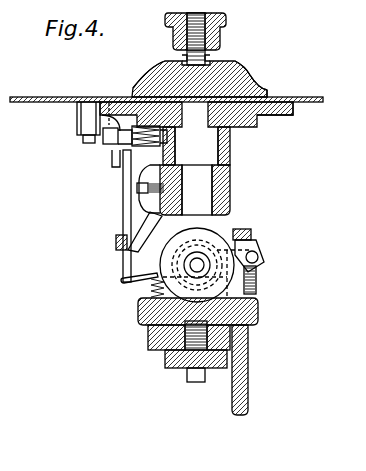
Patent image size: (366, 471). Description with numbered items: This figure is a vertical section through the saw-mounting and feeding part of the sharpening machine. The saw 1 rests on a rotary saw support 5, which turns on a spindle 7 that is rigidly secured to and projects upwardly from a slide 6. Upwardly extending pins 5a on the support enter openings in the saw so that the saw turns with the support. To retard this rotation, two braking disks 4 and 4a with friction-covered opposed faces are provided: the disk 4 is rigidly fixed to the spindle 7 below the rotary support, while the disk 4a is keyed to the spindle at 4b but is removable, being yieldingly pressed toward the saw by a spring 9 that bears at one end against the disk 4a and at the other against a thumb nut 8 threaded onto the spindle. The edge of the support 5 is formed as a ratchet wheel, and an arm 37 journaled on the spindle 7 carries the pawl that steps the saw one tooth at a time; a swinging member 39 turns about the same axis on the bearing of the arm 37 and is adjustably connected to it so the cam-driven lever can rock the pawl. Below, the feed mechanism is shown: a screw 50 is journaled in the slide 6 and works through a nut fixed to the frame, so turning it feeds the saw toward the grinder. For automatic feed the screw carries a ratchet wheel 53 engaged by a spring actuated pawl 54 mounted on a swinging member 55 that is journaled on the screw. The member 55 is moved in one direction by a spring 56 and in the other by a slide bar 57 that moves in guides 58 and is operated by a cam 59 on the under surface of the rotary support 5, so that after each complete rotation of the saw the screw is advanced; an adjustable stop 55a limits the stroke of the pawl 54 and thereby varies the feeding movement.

The saw 1 is at (313, 103).
The braking disk 4 is at (257, 122).
The braking disk 4a is at (243, 78).
The key 4b is at (157, 62).
The saw support 5 is at (290, 115).
The pins 5a is at (124, 90).
The slide 6 is at (232, 193).
The spindle 7 is at (174, 190).
The thumb nut 8 is at (224, 26).
The spring 9 is at (210, 52).
The arm 37 is at (232, 142).
The swinging member 39 is at (233, 157).
The screw 50 is at (200, 260).
The ratchet wheel 53 is at (197, 265).
The pawl 54 is at (252, 240).
The swinging member 55 is at (137, 276).
The adjustable stop 55a is at (257, 277).
The spring 56 is at (152, 292).
The slide bar 57 is at (122, 208).
The guides 58 is at (122, 252).
The cam 59 is at (121, 98).